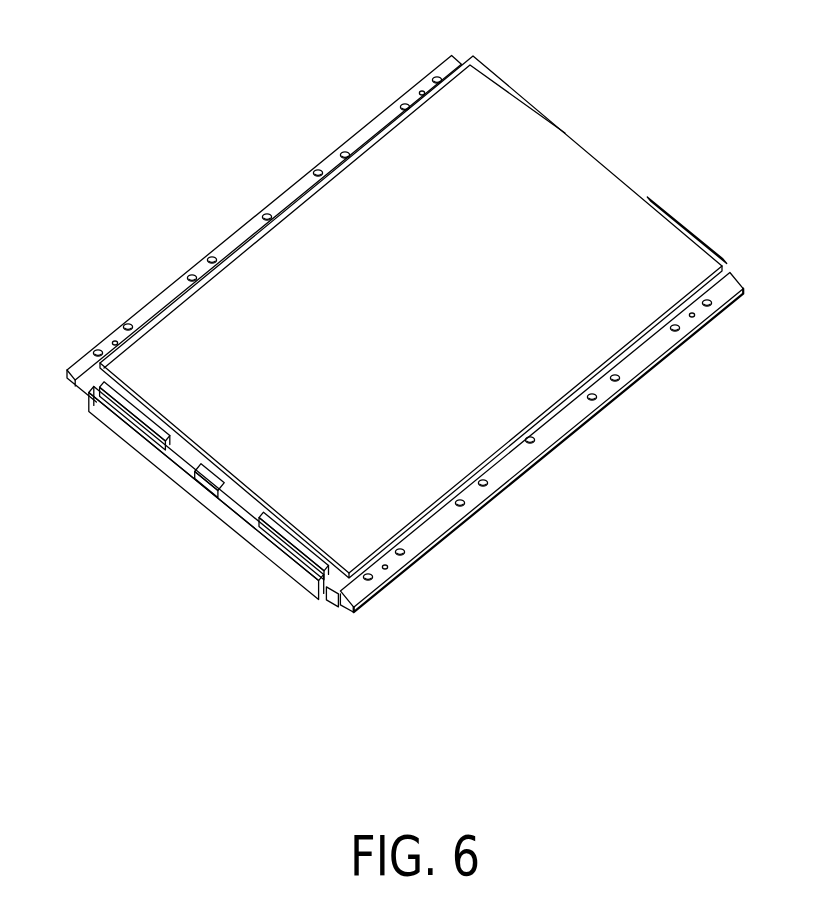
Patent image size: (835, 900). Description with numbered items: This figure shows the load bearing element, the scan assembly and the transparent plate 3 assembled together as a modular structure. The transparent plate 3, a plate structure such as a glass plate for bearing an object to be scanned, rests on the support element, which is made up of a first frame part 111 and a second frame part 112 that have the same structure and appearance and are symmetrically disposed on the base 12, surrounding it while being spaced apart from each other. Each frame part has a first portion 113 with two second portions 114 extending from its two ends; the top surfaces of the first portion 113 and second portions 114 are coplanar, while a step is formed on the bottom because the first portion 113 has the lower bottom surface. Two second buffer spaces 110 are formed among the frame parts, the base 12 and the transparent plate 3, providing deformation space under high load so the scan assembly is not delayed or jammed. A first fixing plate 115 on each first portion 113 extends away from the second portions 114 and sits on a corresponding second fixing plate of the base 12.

The transparent plate 3 is at (370, 467).
The base 12 is at (302, 577).
The second buffer space 110 is at (235, 497).
The first frame part 111 is at (488, 67).
The second frame part 112 is at (682, 233).
The first portion 113 is at (95, 382).
The second portion 114 is at (140, 417).
The first fixing plate 115 is at (508, 465).